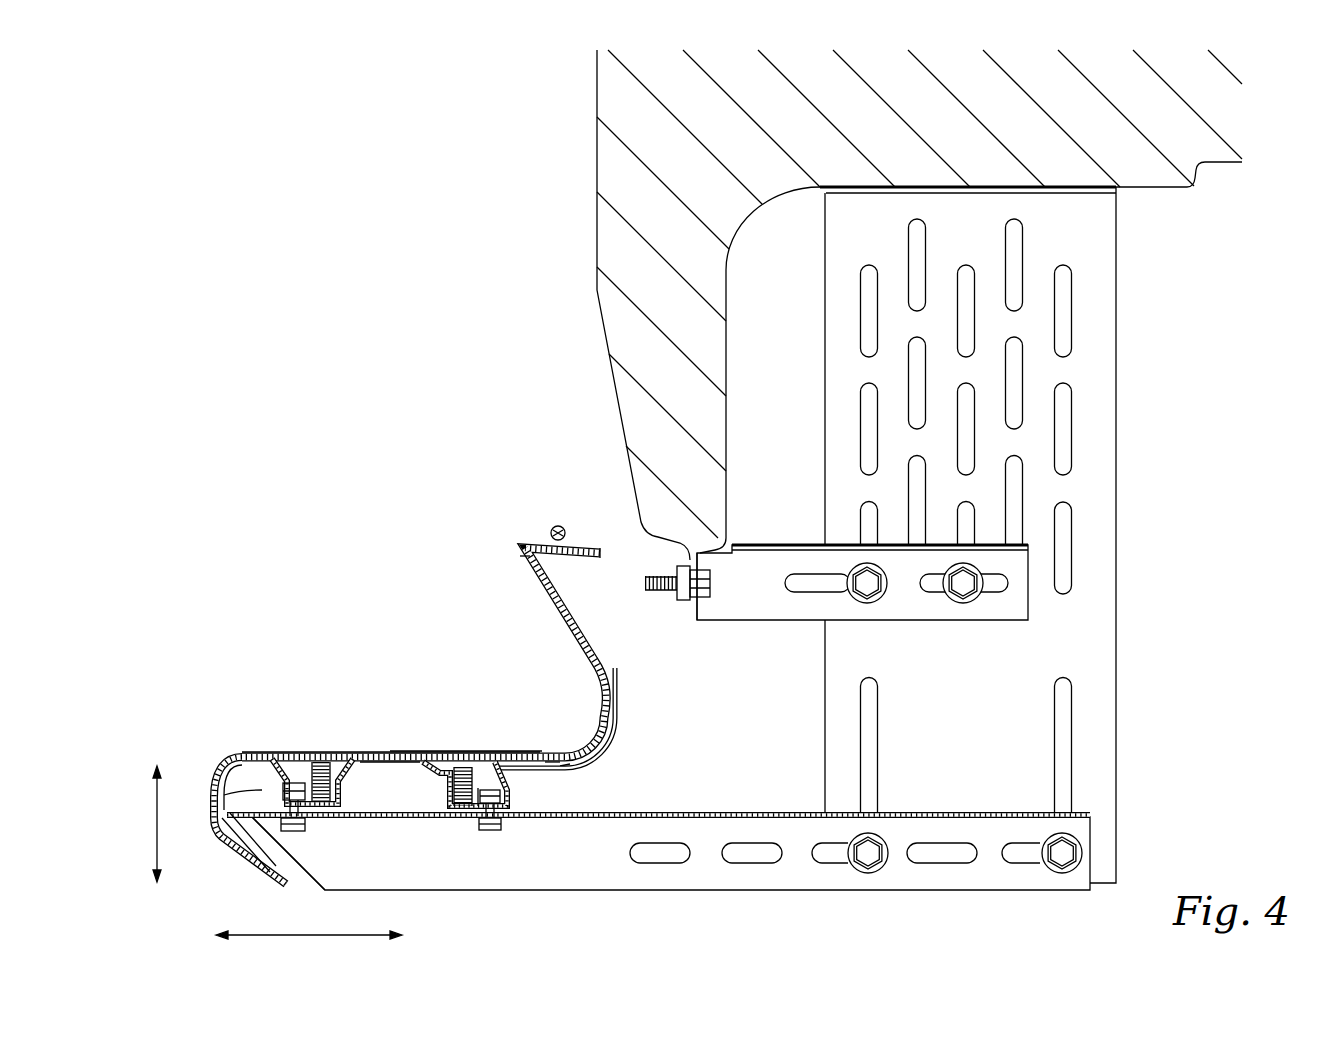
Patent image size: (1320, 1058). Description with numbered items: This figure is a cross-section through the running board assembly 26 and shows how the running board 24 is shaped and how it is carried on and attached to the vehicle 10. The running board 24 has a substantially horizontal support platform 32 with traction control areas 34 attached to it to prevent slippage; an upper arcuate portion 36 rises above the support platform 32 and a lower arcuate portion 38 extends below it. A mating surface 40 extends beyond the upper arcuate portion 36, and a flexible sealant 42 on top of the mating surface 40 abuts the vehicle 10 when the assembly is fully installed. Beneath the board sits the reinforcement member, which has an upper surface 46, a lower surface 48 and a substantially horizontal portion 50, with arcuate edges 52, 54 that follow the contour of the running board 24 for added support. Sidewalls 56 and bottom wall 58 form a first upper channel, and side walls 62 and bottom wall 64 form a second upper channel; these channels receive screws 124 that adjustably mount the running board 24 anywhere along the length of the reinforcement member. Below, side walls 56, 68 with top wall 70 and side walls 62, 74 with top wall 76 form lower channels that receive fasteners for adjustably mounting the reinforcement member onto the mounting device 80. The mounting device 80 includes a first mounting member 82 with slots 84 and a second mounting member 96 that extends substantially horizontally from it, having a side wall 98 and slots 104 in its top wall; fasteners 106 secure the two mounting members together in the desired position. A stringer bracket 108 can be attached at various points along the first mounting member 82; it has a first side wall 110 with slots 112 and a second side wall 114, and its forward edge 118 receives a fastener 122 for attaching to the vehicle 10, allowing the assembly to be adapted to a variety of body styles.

The vehicle 10 is at (602, 320).
The running board 24 is at (522, 557).
The running board assembly 26 is at (421, 697).
The support platform 32 is at (572, 762).
The traction control areas 34 is at (505, 750).
The upper arcuate portion 36 is at (550, 598).
The lower arcuate portion 38 is at (212, 830).
The mating surface 40 is at (530, 545).
The flexible sealant 42 is at (560, 528).
The upper surface 46 is at (392, 752).
The lower surface 48 is at (375, 763).
The substantially horizontal portion 50 is at (565, 768).
The arcuate edge 52 is at (620, 700).
The arcuate edge 54 is at (268, 790).
The sidewalls 56 is at (305, 752).
The bottom wall 58 is at (320, 805).
The side walls 62 is at (447, 766).
The bottom wall 64 is at (472, 800).
The side wall 68 is at (238, 760).
The top wall 70 is at (270, 877).
The side wall 74 is at (508, 789).
The top wall 76 is at (497, 827).
The mounting device 80 is at (1180, 437).
The first mounting member 82 is at (968, 535).
The slots 84 is at (1063, 303).
The second mounting member 96 is at (326, 895).
The side wall 98 is at (629, 860).
The slots 104 is at (257, 811).
The fasteners 106 is at (870, 858).
The stringer bracket 108 is at (862, 572).
The first side wall 110 is at (752, 608).
The slots 112 is at (1012, 582).
The second side wall 114 is at (805, 545).
The forward edge 118 is at (698, 607).
The fastener 122 is at (660, 576).
The screw 124 is at (305, 818).